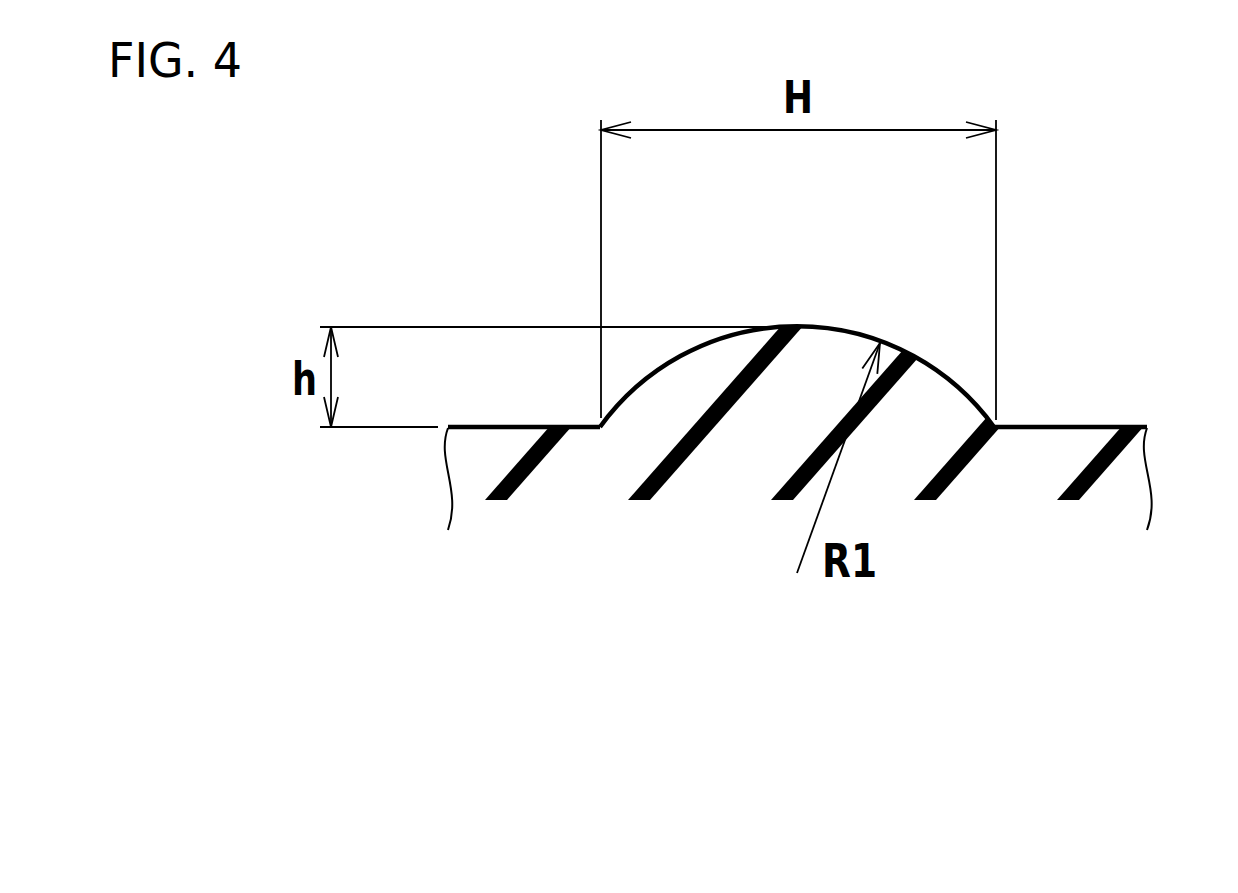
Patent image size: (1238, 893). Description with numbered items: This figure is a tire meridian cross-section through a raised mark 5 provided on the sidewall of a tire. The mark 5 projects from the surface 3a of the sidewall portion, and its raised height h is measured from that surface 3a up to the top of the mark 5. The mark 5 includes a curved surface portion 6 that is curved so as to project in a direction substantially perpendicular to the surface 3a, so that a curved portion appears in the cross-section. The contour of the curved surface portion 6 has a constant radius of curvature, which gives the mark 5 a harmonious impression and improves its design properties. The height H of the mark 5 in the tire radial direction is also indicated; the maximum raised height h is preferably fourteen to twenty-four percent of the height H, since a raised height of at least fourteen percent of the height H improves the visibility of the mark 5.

The surface of the sidewall portion 3a is at (523, 428).
The mark 5 is at (1040, 315).
The curved surface portion 6 is at (842, 327).